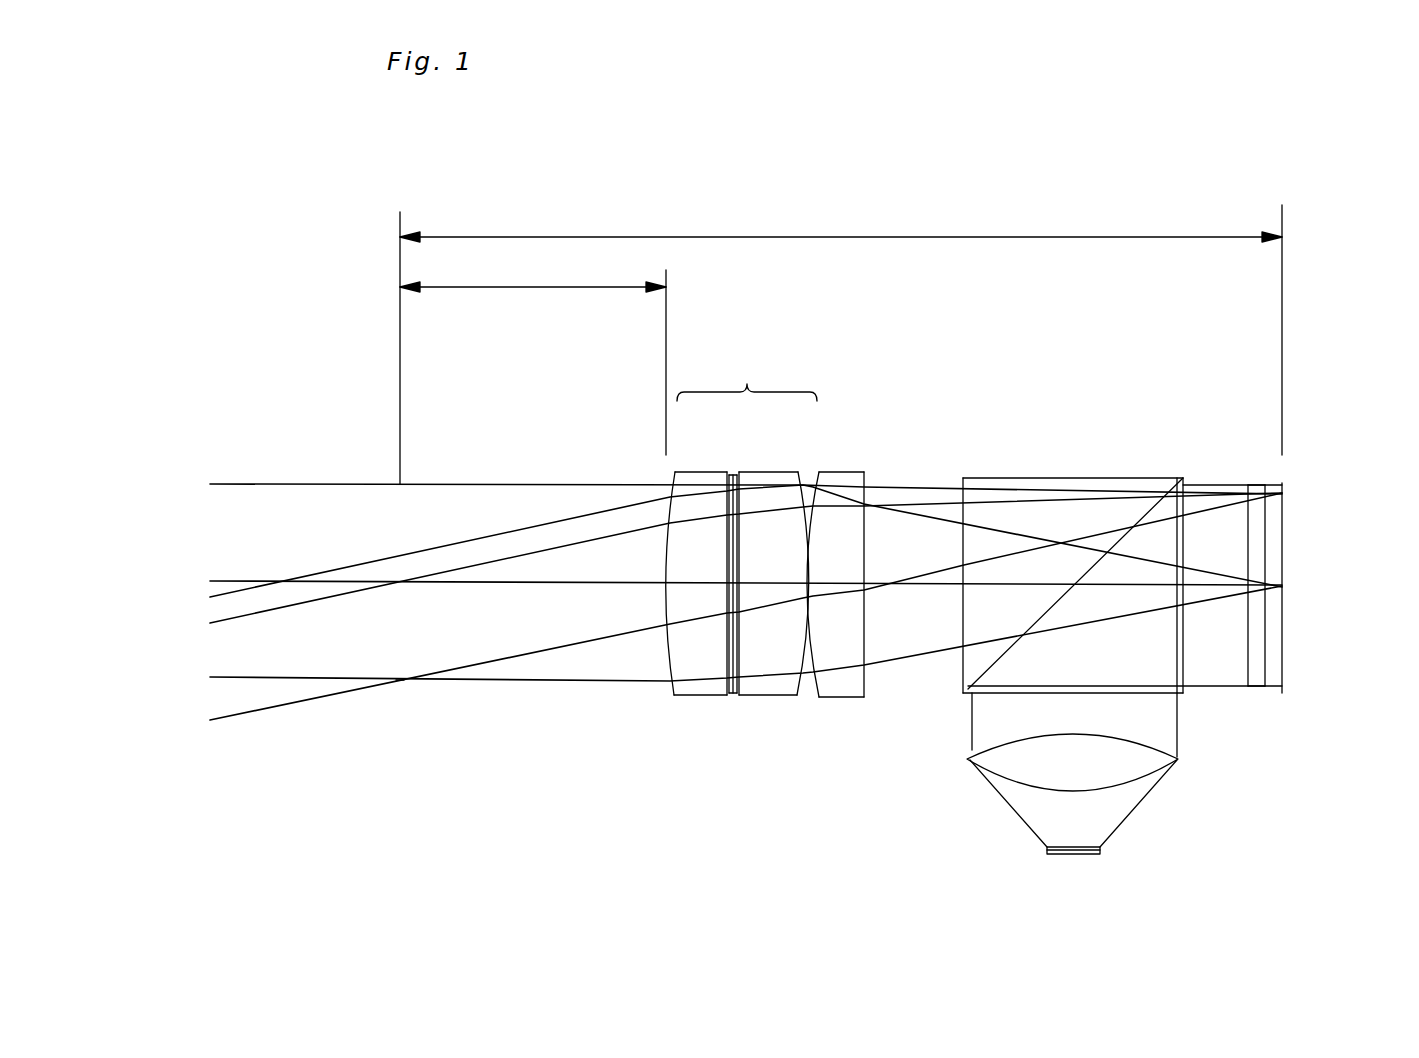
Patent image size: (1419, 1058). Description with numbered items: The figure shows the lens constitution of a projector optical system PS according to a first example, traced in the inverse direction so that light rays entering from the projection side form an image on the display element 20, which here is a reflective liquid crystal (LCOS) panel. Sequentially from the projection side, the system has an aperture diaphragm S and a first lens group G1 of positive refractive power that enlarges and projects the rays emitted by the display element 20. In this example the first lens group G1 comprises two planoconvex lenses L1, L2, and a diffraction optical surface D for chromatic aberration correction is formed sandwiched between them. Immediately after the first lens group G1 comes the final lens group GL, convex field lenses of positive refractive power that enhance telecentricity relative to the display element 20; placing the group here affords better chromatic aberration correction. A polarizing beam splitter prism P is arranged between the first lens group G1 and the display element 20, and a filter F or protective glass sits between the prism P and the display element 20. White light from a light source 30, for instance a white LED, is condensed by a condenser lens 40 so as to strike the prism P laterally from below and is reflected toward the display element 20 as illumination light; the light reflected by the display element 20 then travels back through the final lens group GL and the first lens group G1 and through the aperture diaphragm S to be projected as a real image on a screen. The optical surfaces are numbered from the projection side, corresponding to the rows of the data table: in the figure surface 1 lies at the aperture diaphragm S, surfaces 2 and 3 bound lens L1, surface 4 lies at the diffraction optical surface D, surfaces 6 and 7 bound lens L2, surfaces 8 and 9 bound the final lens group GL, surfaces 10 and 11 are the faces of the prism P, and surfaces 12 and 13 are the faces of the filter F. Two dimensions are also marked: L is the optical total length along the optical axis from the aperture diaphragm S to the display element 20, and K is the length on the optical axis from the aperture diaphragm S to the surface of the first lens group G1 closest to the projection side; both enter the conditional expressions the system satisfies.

The first optical surface 1 is at (398, 683).
The second optical surface 2 is at (668, 677).
The third optical surface 3 is at (728, 681).
The fourth optical surface 4 is at (731, 683).
The sixth optical surface 6 is at (741, 680).
The seventh optical surface 7 is at (800, 682).
The eighth optical surface 8 is at (818, 683).
The ninth optical surface 9 is at (863, 684).
The tenth optical surface 10 is at (957, 686).
The eleventh optical surface 11 is at (1187, 684).
The twelfth optical surface 12 is at (1247, 681).
The thirteenth optical surface 13 is at (1267, 678).
The display element 20 is at (1282, 483).
The light source 30 is at (1092, 857).
The condenser lens 40 is at (1160, 767).
The aperture diaphragm S is at (399, 449).
The length from aperture diaphragm to first lens group K is at (533, 355).
The optical total length L is at (841, 221).
The first lens group G1 is at (747, 377).
The final lens group GL is at (848, 570).
The planoconvex lens L1 is at (674, 597).
The diffraction optical surface D is at (714, 582).
The planoconvex lens L2 is at (774, 597).
The polarizing beam splitter prism P is at (1102, 575).
The filter F is at (1270, 575).
The projector optical system PS is at (1166, 190).